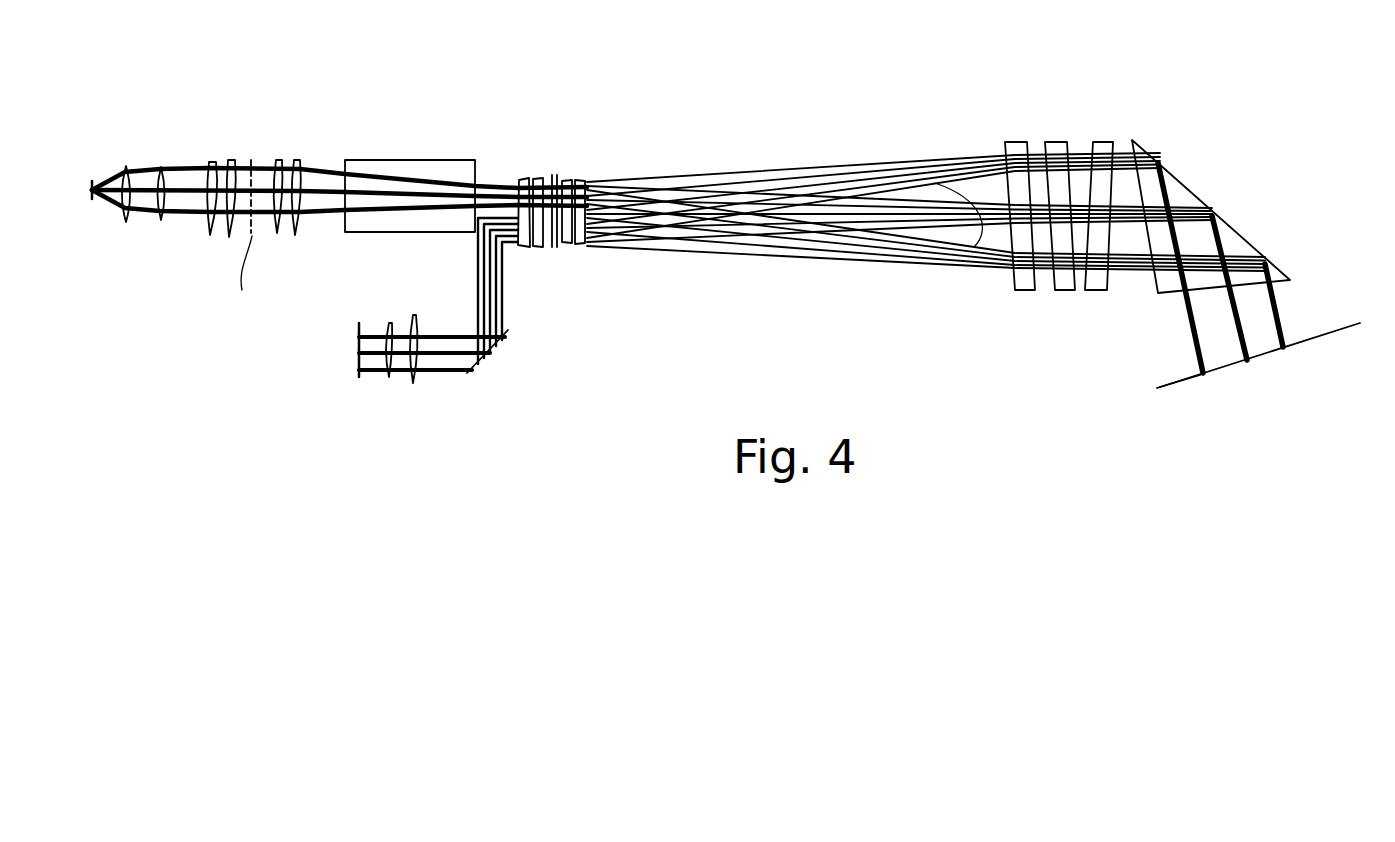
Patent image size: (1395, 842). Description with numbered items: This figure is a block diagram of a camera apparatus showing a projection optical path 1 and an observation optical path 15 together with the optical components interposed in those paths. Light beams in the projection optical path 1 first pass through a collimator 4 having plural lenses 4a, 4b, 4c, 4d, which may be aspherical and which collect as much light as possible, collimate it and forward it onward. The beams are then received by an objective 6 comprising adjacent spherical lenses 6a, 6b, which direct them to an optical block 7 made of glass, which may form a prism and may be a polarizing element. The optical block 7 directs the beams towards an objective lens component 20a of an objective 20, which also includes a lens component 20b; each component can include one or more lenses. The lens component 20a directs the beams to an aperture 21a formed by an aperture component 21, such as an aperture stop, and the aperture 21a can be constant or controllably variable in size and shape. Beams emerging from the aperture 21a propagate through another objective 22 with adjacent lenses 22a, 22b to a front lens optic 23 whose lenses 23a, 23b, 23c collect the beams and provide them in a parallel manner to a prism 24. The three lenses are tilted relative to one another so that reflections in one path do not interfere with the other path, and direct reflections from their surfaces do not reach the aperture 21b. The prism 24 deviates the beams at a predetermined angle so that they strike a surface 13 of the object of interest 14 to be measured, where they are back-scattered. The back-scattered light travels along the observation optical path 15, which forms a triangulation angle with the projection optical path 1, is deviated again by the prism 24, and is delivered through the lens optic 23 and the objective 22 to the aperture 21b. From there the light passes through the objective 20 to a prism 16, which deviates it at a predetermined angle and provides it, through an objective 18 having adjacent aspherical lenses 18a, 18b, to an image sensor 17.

The projection optical path 1 is at (93, 184).
The collimator 4 is at (227, 238).
The collimator lens 4a is at (125, 163).
The collimator lens 4b is at (161, 165).
The collimator lens 4c is at (209, 160).
The collimator lens 4d is at (231, 158).
The objective 6 is at (293, 202).
The spherical lens 6a is at (271, 237).
The spherical lens 6b is at (291, 236).
The optical block 7 is at (388, 160).
The surface 13 is at (1172, 390).
The object of interest 14 is at (1267, 400).
The observation optical path 15 is at (862, 180).
The prism 16 is at (492, 354).
The image sensor 17 is at (360, 380).
The objective 18 is at (435, 370).
The aspherical lens 18a is at (388, 380).
The aspherical lens 18b is at (413, 387).
The objective 20 is at (491, 175).
The objective lens component 20a is at (518, 177).
The objective lens component 20b is at (523, 250).
The aperture component 21 is at (617, 237).
The aperture 21a is at (552, 173).
The aperture 21b is at (551, 250).
The objective 22 is at (656, 198).
The lens 22a is at (565, 178).
The lens 22b is at (580, 178).
The front lens optic 23 is at (1030, 201).
The lens 23a is at (1015, 140).
The lens 23b is at (1055, 140).
The lens 23c is at (1102, 140).
The prism 24 is at (1233, 237).